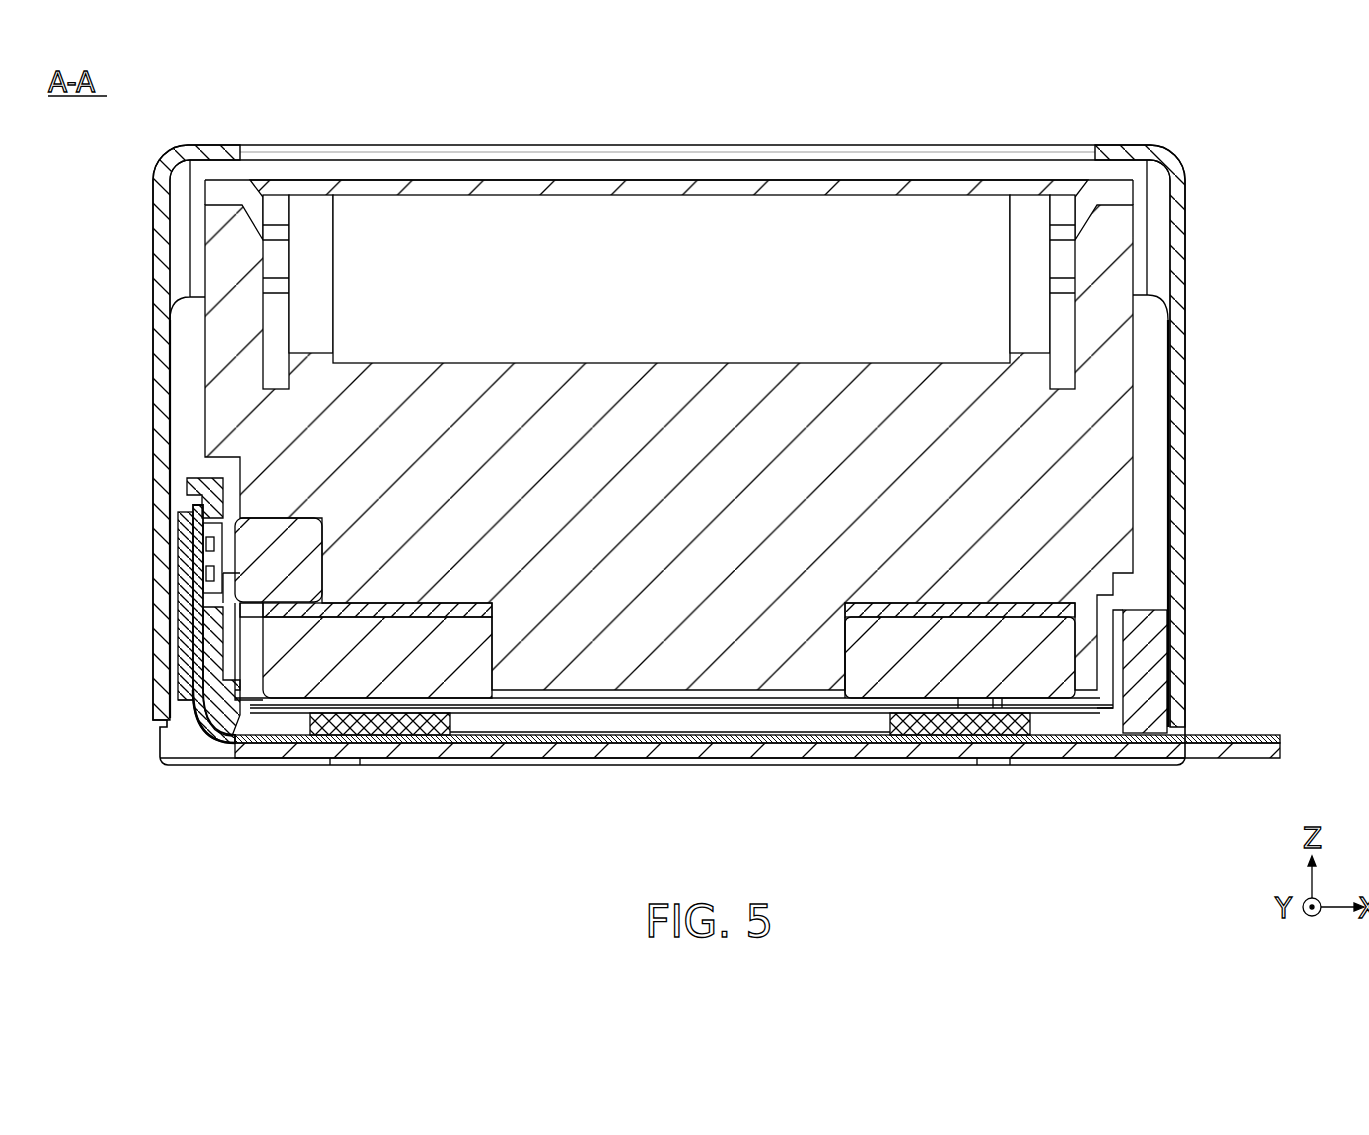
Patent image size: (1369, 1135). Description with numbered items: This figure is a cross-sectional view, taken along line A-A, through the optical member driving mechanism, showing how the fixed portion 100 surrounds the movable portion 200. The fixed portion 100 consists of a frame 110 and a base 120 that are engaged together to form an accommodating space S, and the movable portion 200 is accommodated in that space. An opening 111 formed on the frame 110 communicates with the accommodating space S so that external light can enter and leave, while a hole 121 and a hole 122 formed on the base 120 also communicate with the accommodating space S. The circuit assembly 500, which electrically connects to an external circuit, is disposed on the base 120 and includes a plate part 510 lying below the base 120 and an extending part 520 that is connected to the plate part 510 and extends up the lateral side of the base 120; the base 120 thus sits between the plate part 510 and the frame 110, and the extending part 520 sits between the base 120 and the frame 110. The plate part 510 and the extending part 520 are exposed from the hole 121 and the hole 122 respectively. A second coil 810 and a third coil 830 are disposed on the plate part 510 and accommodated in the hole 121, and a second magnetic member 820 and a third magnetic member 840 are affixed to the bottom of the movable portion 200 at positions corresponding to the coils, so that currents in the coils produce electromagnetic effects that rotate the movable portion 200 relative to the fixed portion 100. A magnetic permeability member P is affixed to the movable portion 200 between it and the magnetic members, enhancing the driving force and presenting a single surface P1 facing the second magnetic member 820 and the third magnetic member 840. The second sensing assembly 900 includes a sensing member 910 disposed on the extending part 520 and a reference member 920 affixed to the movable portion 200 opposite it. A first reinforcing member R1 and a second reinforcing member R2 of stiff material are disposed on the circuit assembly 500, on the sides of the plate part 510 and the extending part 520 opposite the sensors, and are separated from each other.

The fixed portion 100 is at (751, 451).
The frame 110 is at (1172, 573).
The opening 111 is at (988, 152).
The base 120 is at (1157, 648).
The hole 121 is at (1060, 724).
The hole 122 is at (213, 597).
The movable portion 200 is at (1103, 444).
The circuit assembly 500 is at (686, 653).
The plate part 510 is at (787, 743).
The extending part 520 is at (203, 712).
The second coil 810 is at (945, 727).
The second magnetic member 820 is at (1010, 667).
The third coil 830 is at (393, 727).
The third magnetic member 840 is at (320, 667).
The second sensing assembly 900 is at (169, 602).
The sensing member 910 is at (187, 563).
The reference member 920 is at (262, 535).
The magnetic permeability member P is at (1027, 600).
The single surface P1 is at (880, 622).
The first reinforcing member R1 is at (683, 745).
The second reinforcing member R2 is at (185, 637).
The accommodating space S is at (1160, 237).